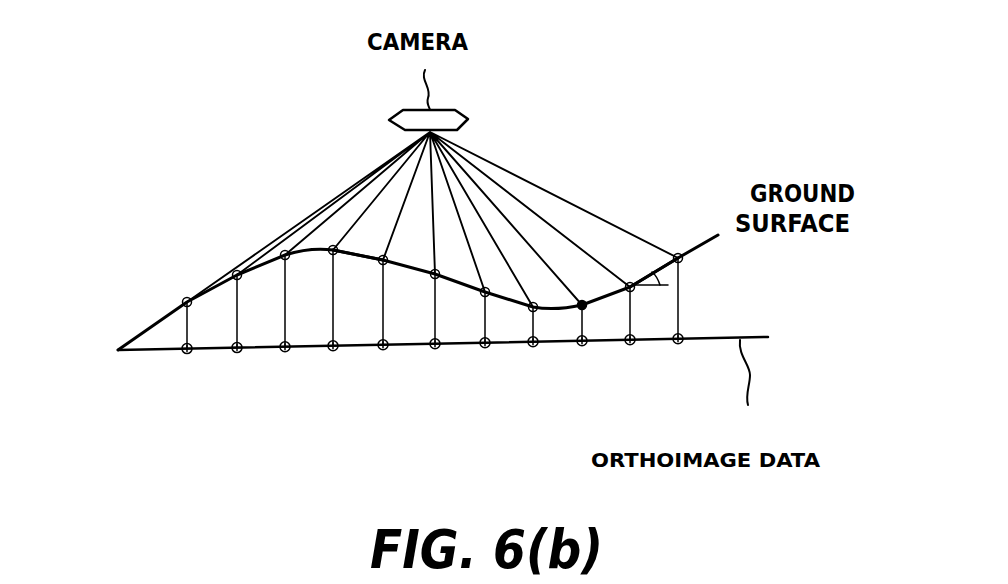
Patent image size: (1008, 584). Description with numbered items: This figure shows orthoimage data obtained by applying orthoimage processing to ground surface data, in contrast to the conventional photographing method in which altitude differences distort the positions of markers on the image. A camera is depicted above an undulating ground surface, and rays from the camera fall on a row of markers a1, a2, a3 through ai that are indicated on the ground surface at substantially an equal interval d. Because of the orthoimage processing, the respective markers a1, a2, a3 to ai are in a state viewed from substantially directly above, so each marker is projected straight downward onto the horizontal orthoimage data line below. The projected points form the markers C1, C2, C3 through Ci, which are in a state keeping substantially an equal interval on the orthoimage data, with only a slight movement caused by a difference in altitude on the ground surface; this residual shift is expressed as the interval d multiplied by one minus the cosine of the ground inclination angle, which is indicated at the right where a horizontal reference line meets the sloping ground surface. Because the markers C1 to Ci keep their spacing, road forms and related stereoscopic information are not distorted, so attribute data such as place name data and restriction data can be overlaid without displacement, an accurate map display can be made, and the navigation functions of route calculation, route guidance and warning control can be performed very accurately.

The marker a1 is at (182, 296).
The marker a2 is at (235, 268).
The marker a3 is at (283, 248).
The marker ai is at (677, 250).
The marker C1 is at (188, 355).
The marker C2 is at (236, 354).
The marker C3 is at (288, 353).
The marker Ci is at (678, 344).
The interval d is at (670, 258).